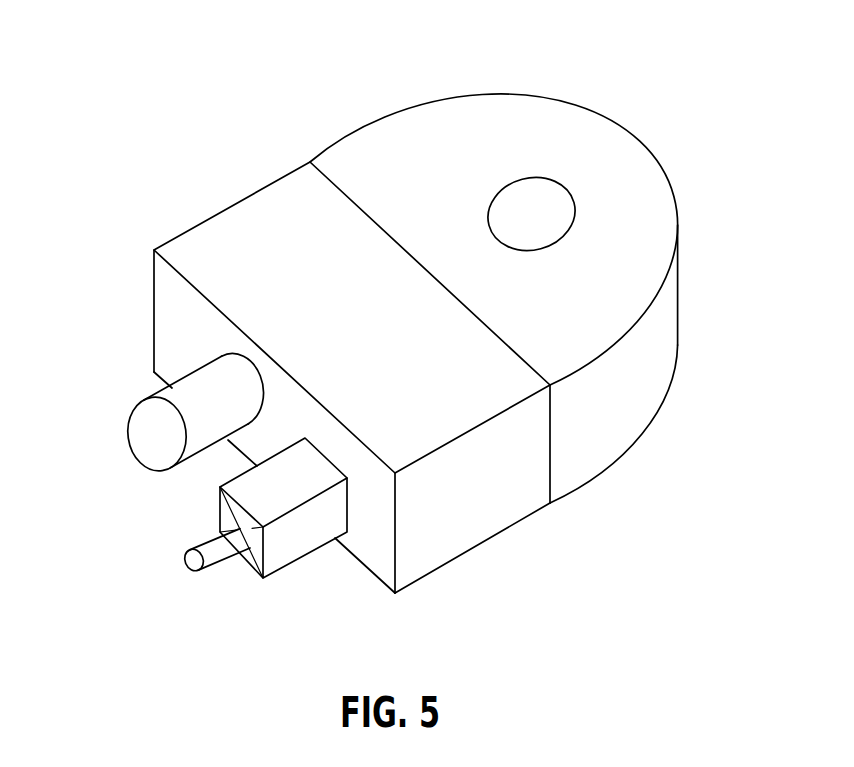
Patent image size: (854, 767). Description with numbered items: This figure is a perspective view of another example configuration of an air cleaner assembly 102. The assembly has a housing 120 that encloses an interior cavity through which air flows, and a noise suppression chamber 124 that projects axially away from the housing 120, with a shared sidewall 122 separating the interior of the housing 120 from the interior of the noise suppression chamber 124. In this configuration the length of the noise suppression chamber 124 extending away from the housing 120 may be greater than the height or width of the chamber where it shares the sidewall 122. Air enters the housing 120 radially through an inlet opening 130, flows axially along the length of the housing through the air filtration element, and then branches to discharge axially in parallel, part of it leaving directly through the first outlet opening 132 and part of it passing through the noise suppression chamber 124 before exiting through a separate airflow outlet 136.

The air cleaner assembly 102 is at (705, 85).
The housing 120 is at (700, 352).
The sidewall 122 is at (177, 313).
The noise suppression chamber 124 is at (313, 583).
The inlet opening 130 is at (530, 205).
The first outlet opening 132 is at (118, 437).
The airflow outlet 136 is at (213, 553).